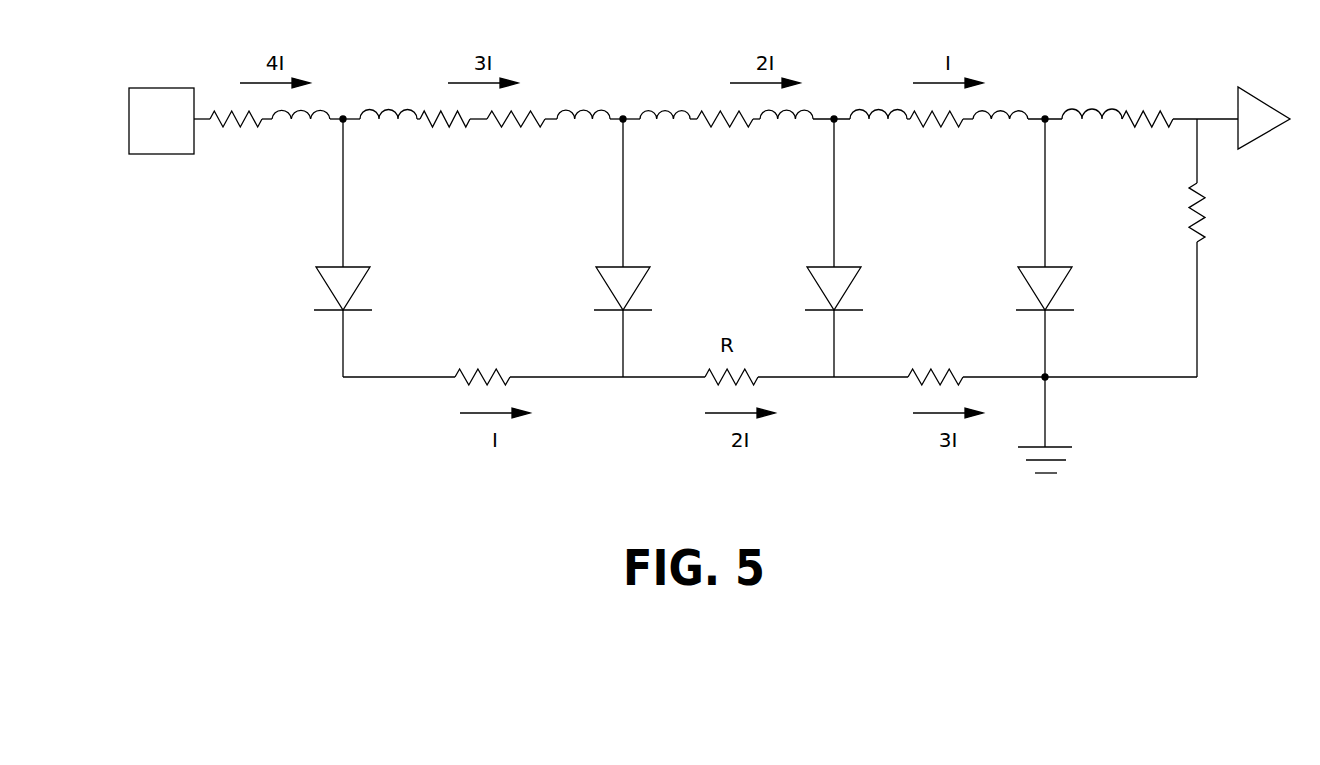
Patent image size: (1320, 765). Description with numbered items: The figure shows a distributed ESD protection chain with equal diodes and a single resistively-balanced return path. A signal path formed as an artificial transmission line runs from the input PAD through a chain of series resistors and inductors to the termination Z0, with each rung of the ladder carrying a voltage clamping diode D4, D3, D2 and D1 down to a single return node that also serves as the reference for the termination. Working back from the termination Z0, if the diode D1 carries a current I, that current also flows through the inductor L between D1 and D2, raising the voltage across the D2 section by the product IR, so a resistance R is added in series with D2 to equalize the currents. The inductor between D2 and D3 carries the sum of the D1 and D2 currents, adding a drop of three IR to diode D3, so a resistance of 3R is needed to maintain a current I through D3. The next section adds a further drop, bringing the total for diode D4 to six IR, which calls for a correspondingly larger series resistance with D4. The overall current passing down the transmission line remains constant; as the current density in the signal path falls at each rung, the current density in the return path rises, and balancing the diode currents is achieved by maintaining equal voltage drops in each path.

The bond pad PAD is at (161, 121).
The resistance R is at (420, 133).
The inductor L is at (680, 104).
The diode D1 is at (1031, 248).
The diode D2 is at (819, 248).
The diode D3 is at (609, 248).
The diode D4 is at (328, 248).
The resistance of 3R is at (482, 360).
The termination Z0 is at (1215, 248).